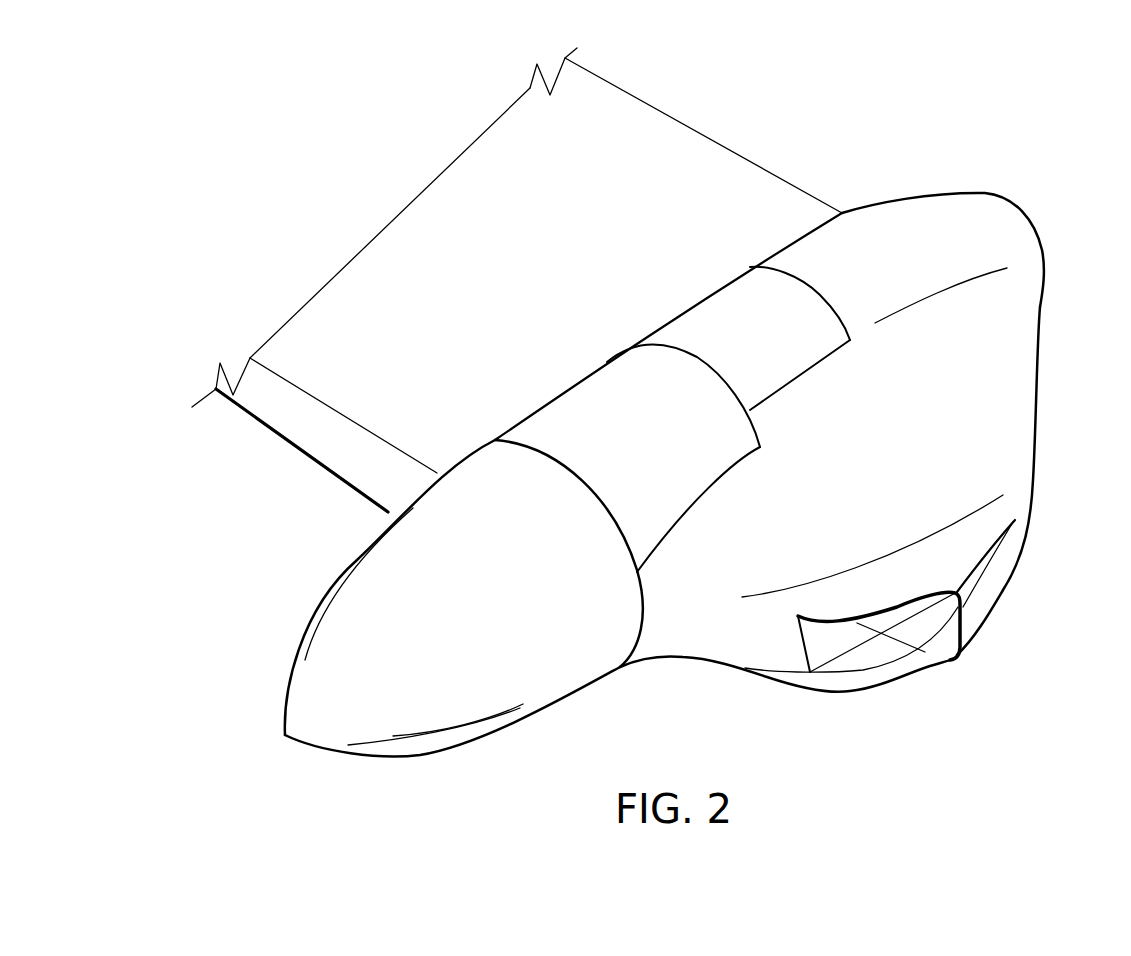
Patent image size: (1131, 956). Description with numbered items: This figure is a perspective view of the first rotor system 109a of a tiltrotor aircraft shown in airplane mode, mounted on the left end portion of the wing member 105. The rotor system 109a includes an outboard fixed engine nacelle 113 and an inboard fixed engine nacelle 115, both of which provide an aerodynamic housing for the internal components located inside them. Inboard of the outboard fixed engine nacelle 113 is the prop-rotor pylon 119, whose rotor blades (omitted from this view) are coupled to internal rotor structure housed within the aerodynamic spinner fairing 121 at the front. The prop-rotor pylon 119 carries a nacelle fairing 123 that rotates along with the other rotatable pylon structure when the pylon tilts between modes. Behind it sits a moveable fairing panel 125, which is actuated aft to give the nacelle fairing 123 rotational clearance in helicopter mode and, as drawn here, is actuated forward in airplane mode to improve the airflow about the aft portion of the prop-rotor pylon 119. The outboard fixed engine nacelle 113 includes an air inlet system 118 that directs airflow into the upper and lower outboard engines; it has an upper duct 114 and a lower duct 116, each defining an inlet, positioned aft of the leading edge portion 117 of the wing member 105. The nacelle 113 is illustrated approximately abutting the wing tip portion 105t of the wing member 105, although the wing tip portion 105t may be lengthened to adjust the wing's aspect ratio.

The wing member 105 is at (677, 113).
The wing tip portion 105t is at (1000, 573).
The first rotor system 109a is at (280, 753).
The outboard fixed engine nacelle 113 is at (1025, 398).
The upper duct 114 is at (937, 602).
The inboard fixed engine nacelle 115 is at (1010, 222).
The lower duct 116 is at (943, 612).
The leading edge portion 117 is at (318, 455).
The air inlet system 118 is at (865, 598).
The prop-rotor pylon 119 is at (547, 400).
The aerodynamic spinner fairing 121 is at (308, 685).
The nacelle fairing 123 is at (617, 377).
The moveable fairing panel 125 is at (712, 312).